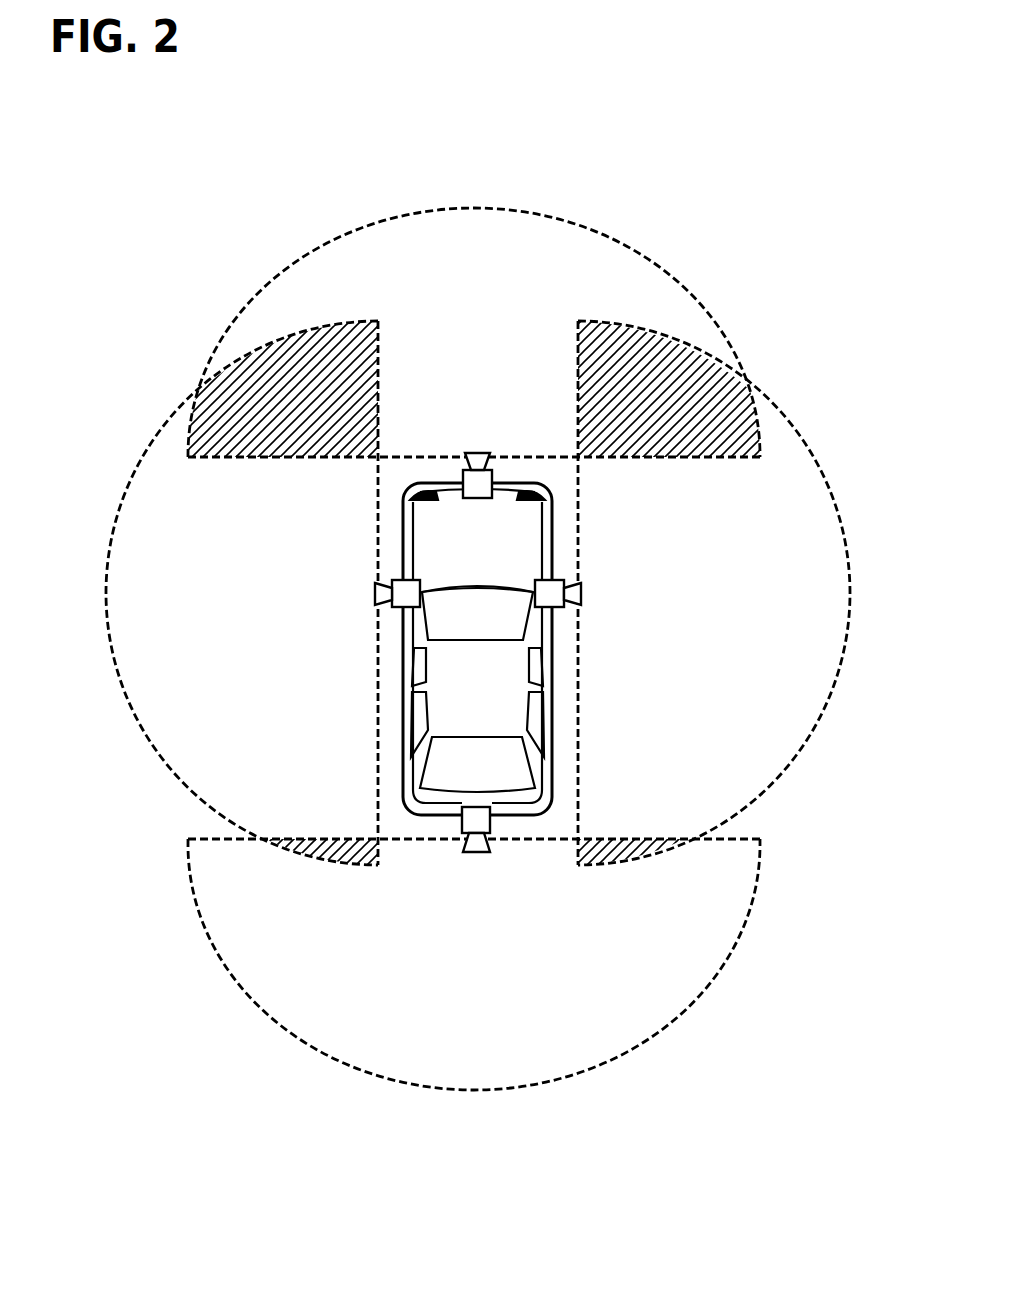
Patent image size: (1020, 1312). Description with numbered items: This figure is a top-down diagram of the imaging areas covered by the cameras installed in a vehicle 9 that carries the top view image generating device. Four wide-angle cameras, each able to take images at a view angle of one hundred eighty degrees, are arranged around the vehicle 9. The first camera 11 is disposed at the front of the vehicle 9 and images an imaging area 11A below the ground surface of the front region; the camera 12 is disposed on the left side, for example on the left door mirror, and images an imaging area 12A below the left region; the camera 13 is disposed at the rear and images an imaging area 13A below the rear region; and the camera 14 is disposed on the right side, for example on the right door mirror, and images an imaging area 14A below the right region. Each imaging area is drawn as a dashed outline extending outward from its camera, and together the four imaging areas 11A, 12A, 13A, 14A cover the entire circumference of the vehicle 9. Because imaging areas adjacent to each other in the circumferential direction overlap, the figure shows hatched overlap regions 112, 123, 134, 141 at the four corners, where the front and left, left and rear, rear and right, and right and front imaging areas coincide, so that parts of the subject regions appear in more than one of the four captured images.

The vehicle 9 is at (553, 740).
The first camera 11 is at (463, 462).
The camera 12 is at (384, 578).
The camera 13 is at (489, 843).
The camera 14 is at (575, 578).
The imaging area 11A is at (612, 232).
The imaging area 12A is at (125, 680).
The imaging area 13A is at (653, 1033).
The imaging area 14A is at (842, 637).
The overlap region 112 is at (281, 360).
The overlap region 141 is at (693, 370).
The overlap region 123 is at (330, 855).
The overlap region 134 is at (625, 860).